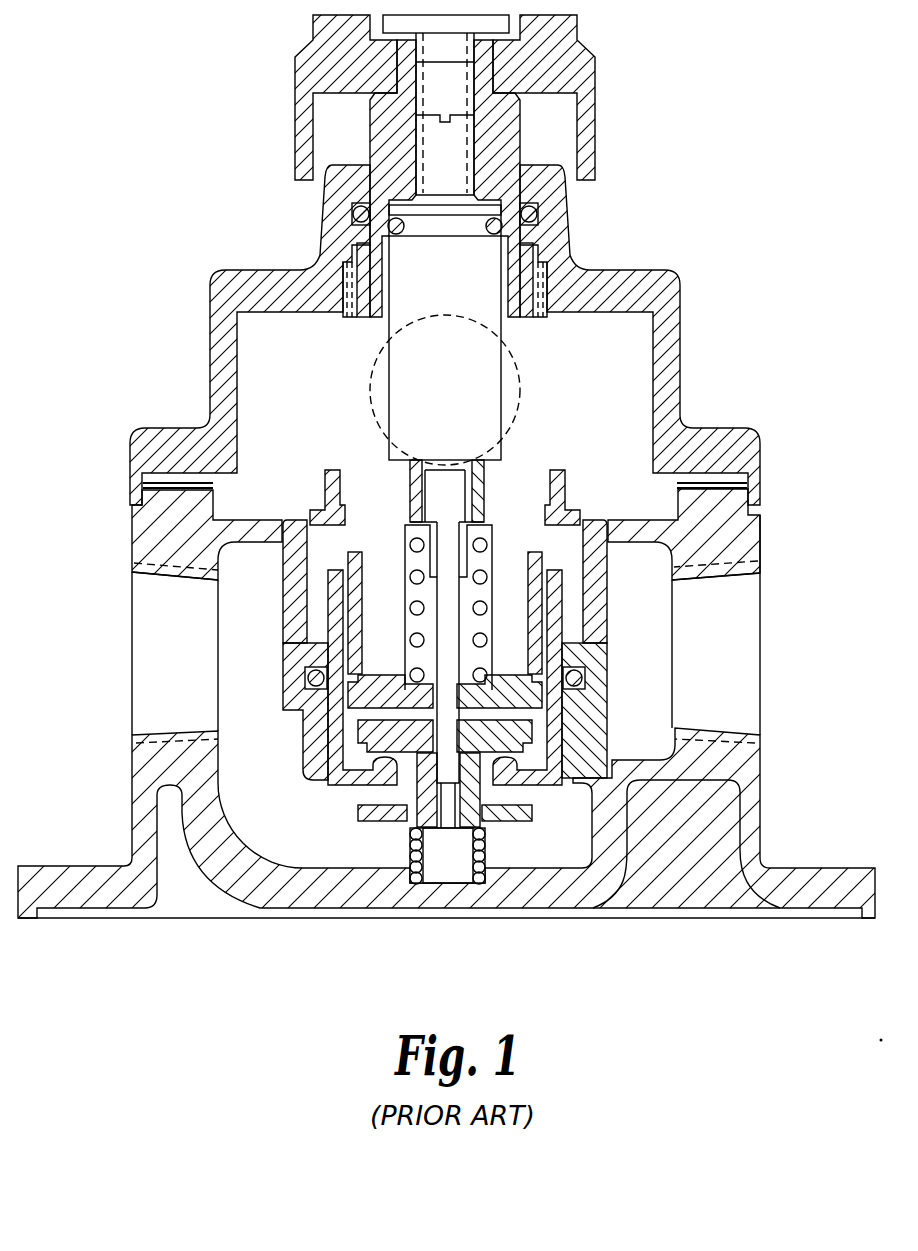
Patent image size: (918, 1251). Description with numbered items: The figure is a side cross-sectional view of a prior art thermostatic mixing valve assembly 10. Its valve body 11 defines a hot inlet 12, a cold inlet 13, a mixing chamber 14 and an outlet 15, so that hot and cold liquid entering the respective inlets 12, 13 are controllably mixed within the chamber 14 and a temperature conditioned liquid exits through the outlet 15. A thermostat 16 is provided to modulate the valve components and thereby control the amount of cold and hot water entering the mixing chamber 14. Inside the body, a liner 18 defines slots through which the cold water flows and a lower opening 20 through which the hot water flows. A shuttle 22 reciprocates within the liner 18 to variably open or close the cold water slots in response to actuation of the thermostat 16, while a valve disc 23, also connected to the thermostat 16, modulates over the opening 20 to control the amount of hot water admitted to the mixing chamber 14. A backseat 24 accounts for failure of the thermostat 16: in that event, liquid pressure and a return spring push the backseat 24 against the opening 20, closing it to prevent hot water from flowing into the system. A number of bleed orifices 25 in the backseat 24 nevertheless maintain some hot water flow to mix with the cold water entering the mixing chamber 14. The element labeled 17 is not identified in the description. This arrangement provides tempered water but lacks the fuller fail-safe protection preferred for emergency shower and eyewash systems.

The mixing valve assembly 10 is at (446, 466).
The valve body 11 is at (745, 540).
The hot inlet 12 is at (153, 580).
The cold inlet 13 is at (712, 582).
The mixing chamber 14 is at (593, 432).
The outlet 15 is at (508, 357).
The thermostat 16 is at (500, 257).
The cup member 17 is at (558, 546).
The liner 18 is at (557, 595).
The lower opening 20 is at (500, 785).
The shuttle 22 is at (558, 637).
The valve disc 23 is at (570, 740).
The backseat 24 is at (358, 825).
The bleed orifices 25 is at (403, 818).